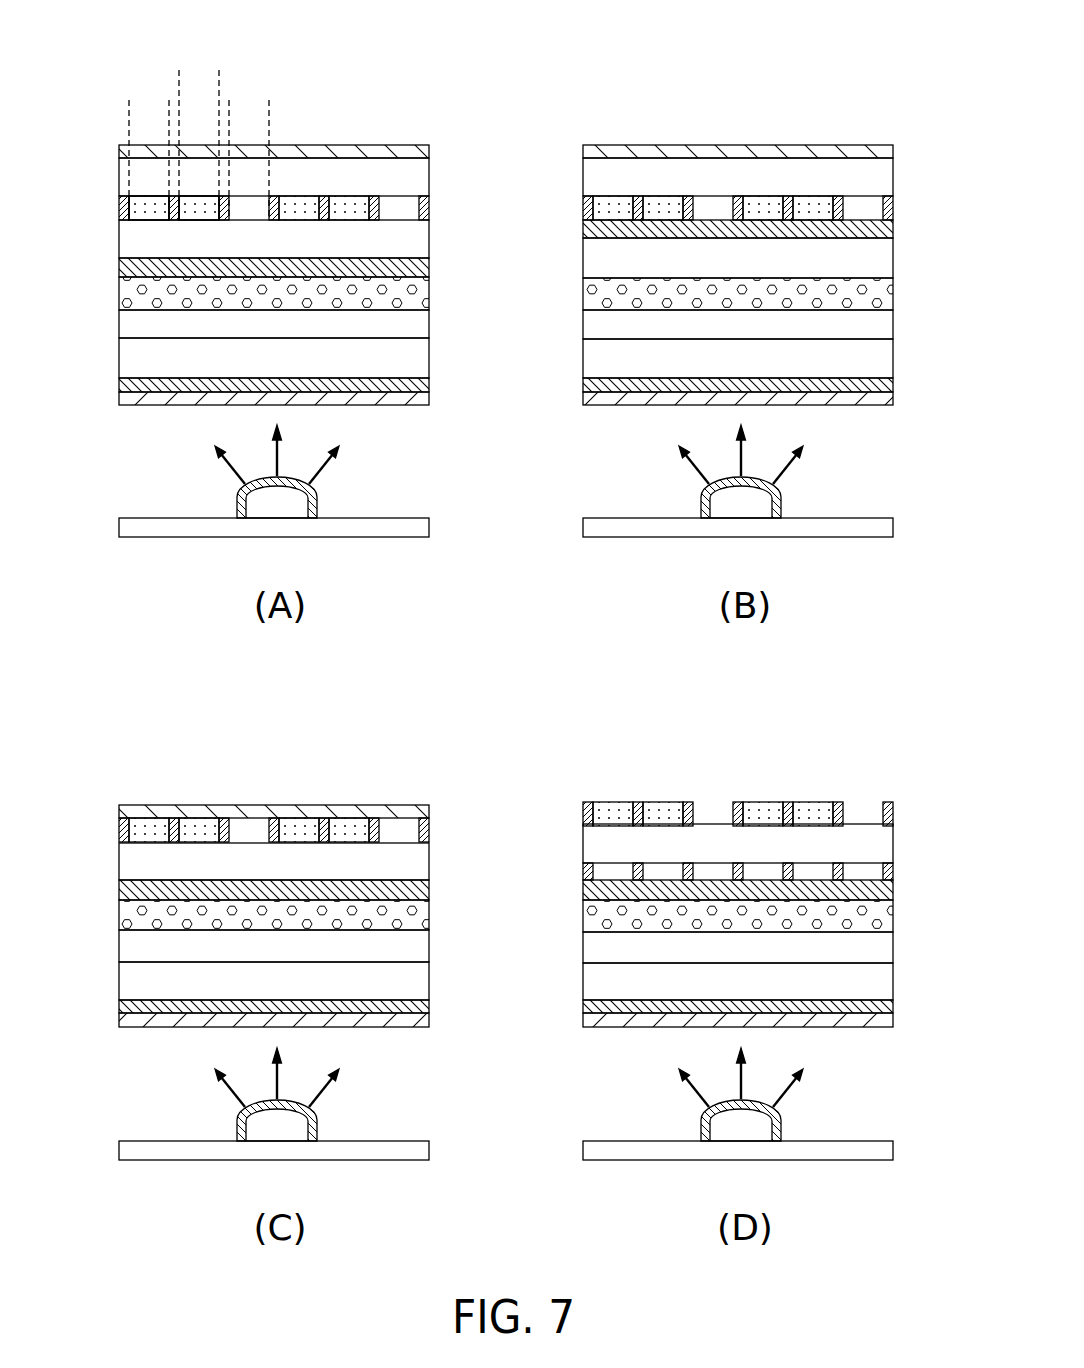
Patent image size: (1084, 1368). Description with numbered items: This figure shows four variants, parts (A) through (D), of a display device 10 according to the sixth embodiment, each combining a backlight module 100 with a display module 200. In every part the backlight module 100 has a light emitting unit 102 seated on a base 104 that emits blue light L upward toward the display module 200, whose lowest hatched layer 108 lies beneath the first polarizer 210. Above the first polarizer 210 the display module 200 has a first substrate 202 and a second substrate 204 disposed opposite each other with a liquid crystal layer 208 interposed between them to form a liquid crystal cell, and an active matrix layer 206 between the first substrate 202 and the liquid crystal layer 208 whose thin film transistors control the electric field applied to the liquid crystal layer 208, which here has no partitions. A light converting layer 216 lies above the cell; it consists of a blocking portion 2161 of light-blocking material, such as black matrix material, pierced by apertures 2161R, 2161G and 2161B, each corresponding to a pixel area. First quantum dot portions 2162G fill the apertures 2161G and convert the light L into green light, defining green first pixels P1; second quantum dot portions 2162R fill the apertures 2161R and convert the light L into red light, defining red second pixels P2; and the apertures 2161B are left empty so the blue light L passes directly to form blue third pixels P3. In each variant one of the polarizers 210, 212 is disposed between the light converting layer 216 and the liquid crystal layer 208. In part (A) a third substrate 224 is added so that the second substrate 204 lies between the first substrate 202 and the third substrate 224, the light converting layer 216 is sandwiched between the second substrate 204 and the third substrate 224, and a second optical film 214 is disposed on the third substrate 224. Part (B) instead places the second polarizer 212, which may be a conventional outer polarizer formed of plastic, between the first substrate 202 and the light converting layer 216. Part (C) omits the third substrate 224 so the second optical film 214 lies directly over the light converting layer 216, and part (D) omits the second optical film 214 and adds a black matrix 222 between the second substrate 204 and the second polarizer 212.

The display device 10 is at (434, 72).
The backlight module 100 is at (110, 393).
The light emitting unit 102 is at (321, 497).
The substrate 104 is at (417, 528).
The light guide layer 108 is at (417, 403).
The display module 200 is at (110, 145).
The first substrate 202 is at (417, 357).
The second substrate 204 is at (417, 235).
The active matrix layer 206 is at (417, 328).
The liquid crystal layer 208 is at (443, 277).
The first polarizer 210 is at (417, 388).
The second polarizer 212 is at (417, 270).
The second optical film 214 is at (418, 148).
The light converting layer 216 is at (443, 196).
The black matrix 222 is at (907, 863).
The third substrate 224 is at (417, 172).
The blocking portion 2161 is at (374, 197).
The aperture 2161R is at (169, 100).
The aperture 2161G is at (219, 70).
The aperture 2161B is at (269, 100).
The second quantum dot portion 2162R is at (153, 210).
The first quantum dot portion 2162G is at (202, 207).
The first pixel P1 is at (200, 12).
The second pixel P2 is at (127, 43).
The third pixel P3 is at (274, 43).
The light L is at (280, 457).